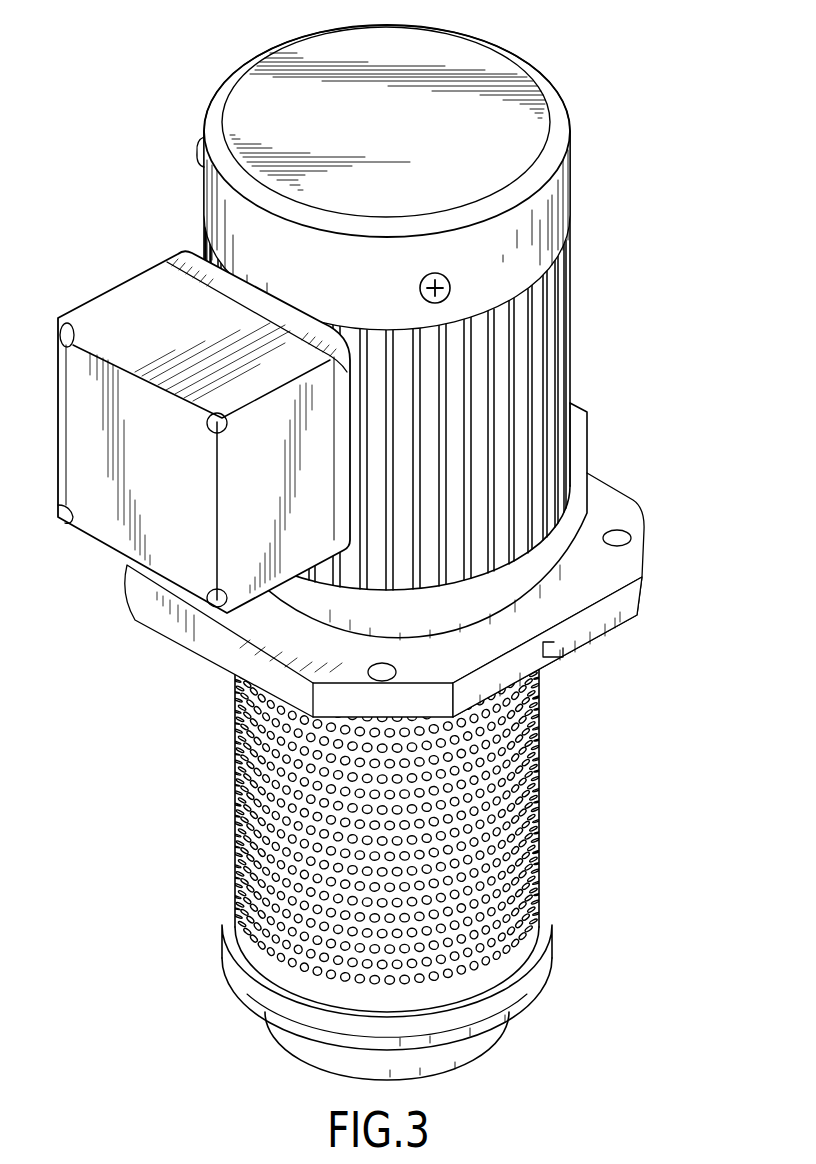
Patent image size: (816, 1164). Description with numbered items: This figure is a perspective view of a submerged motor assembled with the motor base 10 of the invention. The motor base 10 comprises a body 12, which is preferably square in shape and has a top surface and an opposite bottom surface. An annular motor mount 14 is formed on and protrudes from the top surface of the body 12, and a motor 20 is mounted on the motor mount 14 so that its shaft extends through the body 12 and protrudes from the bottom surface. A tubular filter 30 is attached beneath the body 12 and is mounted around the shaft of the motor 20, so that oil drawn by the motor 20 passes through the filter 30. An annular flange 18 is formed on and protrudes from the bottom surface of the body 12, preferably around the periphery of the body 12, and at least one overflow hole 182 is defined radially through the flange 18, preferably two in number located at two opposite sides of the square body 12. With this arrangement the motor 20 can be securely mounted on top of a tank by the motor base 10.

The motor base 10 is at (608, 457).
The body 12 is at (623, 497).
The motor mount 14 is at (267, 603).
The flange 18 is at (606, 626).
The overflow hole 182 is at (542, 660).
The motor 20 is at (458, 57).
The tubular filter 30 is at (517, 803).